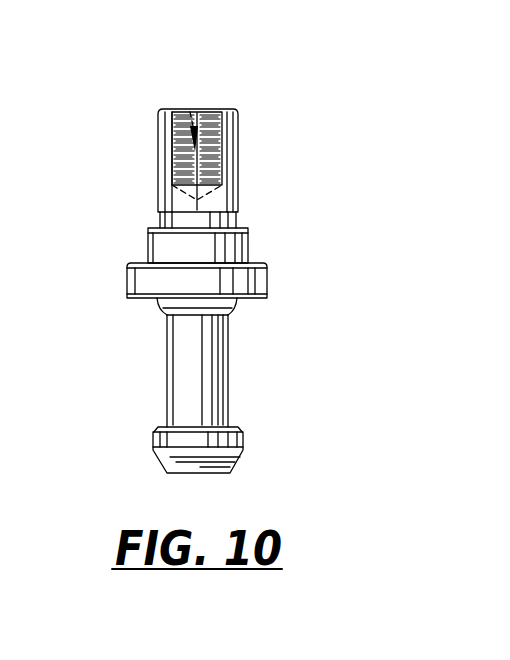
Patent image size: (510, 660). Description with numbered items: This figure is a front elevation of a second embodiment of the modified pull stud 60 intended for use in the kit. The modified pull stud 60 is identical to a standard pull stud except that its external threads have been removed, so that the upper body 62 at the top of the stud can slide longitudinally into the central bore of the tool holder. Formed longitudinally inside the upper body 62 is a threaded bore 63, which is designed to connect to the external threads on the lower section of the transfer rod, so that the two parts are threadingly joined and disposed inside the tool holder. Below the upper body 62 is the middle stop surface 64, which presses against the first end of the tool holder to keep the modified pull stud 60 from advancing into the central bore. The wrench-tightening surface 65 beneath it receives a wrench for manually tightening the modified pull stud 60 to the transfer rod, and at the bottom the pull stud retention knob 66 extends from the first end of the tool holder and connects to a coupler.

The modified pull stud 60 is at (210, 256).
The upper body 62 is at (170, 171).
The threaded bore 63 is at (188, 108).
The middle stop surface 64 is at (175, 247).
The wrench-tightening surface 65 is at (232, 283).
The pull stud retention knob 66 is at (168, 440).